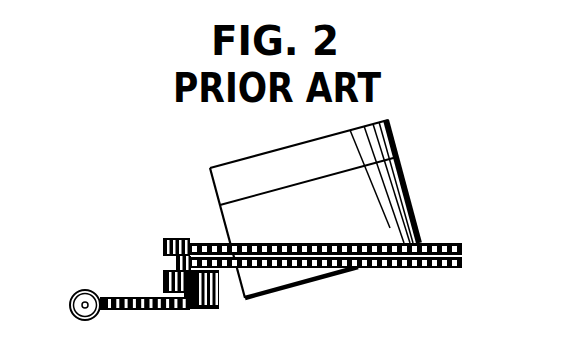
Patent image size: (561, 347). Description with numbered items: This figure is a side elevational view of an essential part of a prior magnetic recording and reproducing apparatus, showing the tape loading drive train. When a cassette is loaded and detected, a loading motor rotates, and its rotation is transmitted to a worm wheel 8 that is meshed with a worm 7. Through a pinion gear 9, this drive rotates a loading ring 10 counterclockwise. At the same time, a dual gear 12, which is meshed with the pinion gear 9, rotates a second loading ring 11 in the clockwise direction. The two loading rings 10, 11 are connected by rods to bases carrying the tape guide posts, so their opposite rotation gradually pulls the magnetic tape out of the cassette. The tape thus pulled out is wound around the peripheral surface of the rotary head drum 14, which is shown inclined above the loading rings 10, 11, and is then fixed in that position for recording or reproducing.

The worm 7 is at (76, 294).
The worm wheel 8 is at (120, 297).
The pinion gear 9 is at (220, 297).
The loading ring 10 is at (453, 268).
The loading ring 11 is at (456, 243).
The dual gear 12 is at (166, 236).
The rotary head drum 14 is at (393, 134).